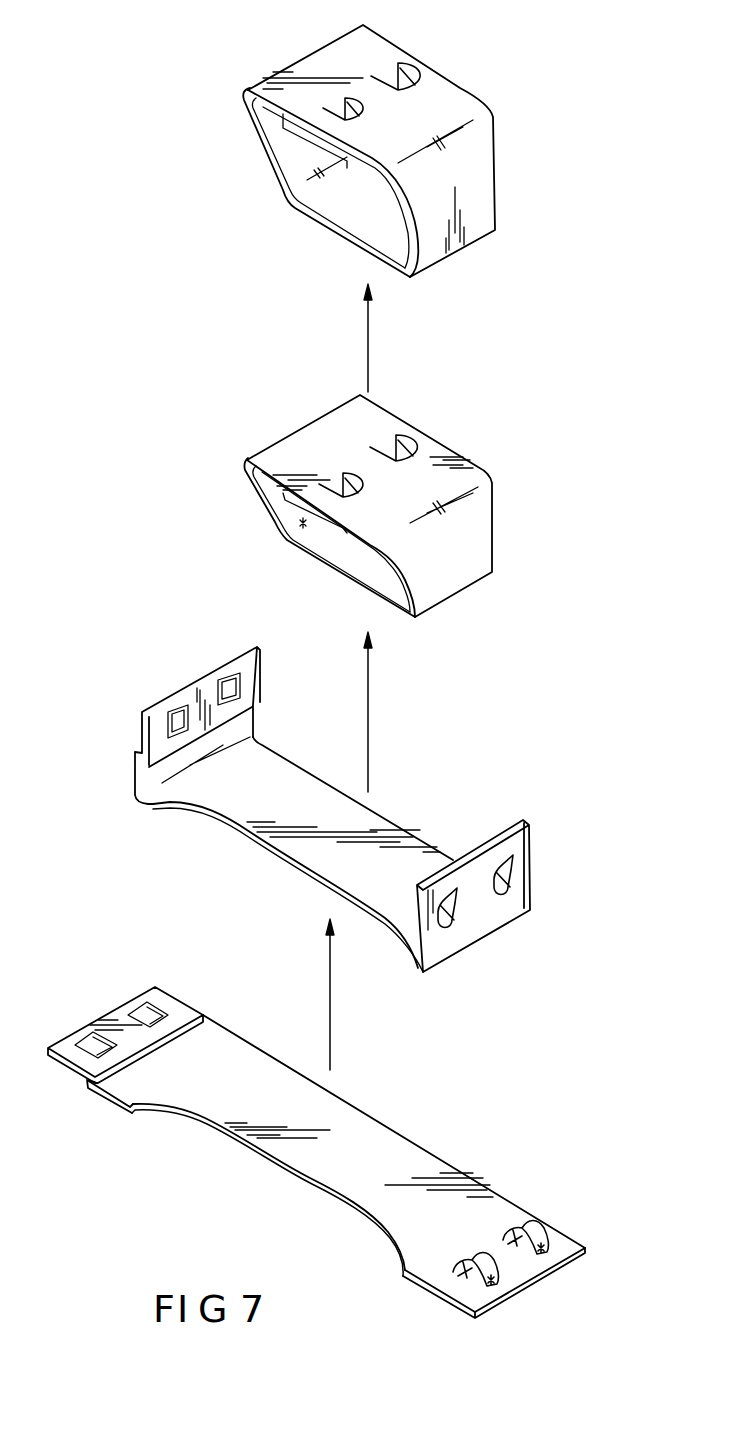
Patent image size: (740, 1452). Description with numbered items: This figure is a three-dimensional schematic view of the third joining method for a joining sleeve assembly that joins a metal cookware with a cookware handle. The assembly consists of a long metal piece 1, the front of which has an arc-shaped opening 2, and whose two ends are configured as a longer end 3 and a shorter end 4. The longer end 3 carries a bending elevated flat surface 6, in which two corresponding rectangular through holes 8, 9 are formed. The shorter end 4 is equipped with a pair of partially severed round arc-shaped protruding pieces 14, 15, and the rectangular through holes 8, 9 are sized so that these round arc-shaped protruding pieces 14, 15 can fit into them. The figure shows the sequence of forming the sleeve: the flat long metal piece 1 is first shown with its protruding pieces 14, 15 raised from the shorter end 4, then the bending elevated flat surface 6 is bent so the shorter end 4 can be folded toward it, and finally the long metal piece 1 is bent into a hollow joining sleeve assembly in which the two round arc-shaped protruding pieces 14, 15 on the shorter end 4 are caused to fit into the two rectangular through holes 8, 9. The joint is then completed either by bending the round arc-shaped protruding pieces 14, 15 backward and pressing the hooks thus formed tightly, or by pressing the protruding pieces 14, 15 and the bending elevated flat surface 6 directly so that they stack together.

The long metal piece 1 is at (488, 185).
The arc-shaped opening 2 is at (302, 883).
The longer end 3 is at (267, 87).
The shorter end 4 is at (460, 88).
The bending elevated flat surface 6 is at (322, 143).
The rectangular through hole 8 is at (178, 710).
The rectangular through hole 9 is at (237, 678).
The round arc-shaped protruding piece 14 is at (337, 110).
The round arc-shaped protruding piece 15 is at (395, 70).